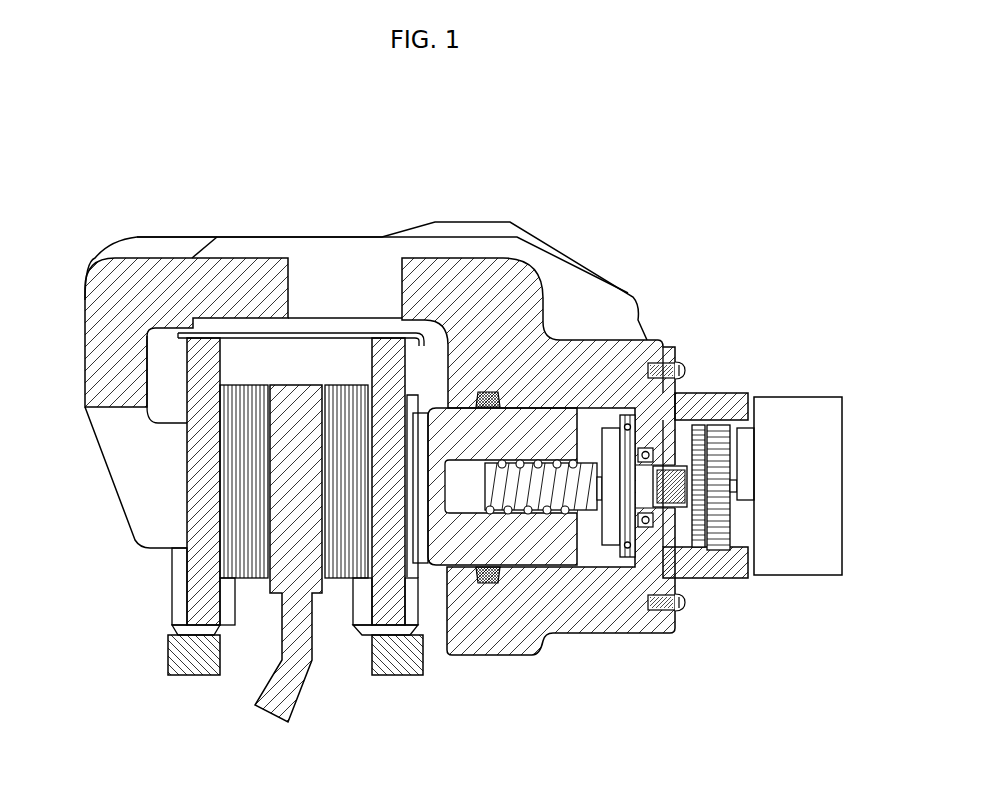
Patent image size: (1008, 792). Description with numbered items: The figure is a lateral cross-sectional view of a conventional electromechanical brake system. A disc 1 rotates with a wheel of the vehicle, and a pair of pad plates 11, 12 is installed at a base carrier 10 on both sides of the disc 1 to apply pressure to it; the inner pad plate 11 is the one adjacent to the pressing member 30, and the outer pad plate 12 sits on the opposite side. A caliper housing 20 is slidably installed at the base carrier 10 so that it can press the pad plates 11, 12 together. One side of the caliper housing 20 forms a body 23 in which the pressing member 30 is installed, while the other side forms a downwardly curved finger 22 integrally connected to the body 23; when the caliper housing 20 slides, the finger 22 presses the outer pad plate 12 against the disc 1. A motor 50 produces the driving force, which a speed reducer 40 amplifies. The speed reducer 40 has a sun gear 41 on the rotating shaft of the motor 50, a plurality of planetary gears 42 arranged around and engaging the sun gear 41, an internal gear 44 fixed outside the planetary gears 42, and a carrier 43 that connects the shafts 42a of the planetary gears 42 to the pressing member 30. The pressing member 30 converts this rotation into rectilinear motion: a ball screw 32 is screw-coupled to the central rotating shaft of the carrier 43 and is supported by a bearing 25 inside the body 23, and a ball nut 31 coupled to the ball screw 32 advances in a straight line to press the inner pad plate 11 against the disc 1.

The disc 1 is at (272, 690).
The base carrier 10 is at (403, 668).
The inner pad plate 11 is at (372, 610).
The outer pad plate 12 is at (197, 595).
The caliper housing 20 is at (584, 236).
The finger 22 is at (112, 483).
The body 23 is at (613, 345).
The bearing 25 is at (657, 440).
The pressing member 30 is at (557, 580).
The ball nut 31 is at (472, 558).
The ball screw 32 is at (528, 497).
The speed reducer 40 is at (785, 496).
The sun gear 41 is at (727, 483).
The planetary gears 42 is at (717, 547).
The shafts of the planetary gears 42a is at (737, 527).
The carrier 43 is at (675, 512).
The internal gear 44 is at (727, 393).
The motor 50 is at (826, 398).